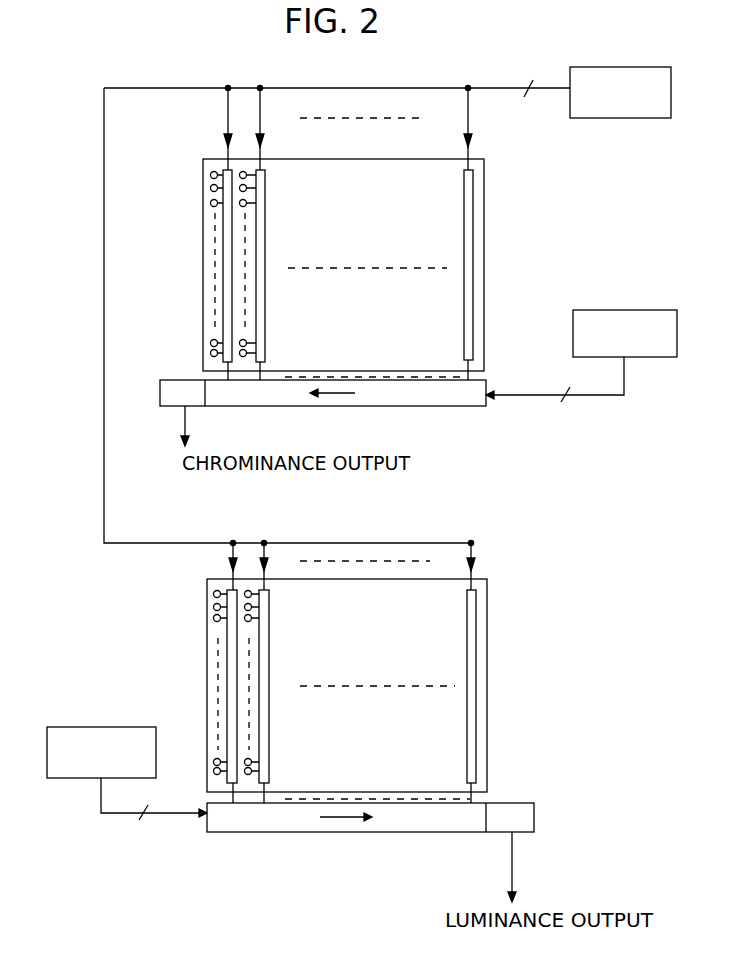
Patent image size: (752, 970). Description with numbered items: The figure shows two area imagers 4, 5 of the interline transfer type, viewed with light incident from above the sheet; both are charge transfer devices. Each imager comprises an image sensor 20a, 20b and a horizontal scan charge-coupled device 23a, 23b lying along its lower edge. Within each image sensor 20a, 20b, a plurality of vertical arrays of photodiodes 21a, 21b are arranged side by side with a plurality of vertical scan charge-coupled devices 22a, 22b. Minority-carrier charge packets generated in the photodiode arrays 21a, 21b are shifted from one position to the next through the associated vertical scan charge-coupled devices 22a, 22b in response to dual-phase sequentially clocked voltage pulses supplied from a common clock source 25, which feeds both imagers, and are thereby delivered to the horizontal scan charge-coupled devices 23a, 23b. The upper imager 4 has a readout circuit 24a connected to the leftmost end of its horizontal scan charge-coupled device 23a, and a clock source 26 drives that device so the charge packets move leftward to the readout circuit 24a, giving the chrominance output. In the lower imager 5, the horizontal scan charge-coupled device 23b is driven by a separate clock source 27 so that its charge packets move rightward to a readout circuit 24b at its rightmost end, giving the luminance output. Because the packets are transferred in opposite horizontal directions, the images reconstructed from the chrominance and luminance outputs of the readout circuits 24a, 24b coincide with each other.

The area imager 4 is at (535, 258).
The area imager 5 is at (532, 704).
The image sensor 20a is at (487, 160).
The image sensor 20b is at (487, 596).
The photodiodes 21a is at (210, 188).
The photodiodes 21b is at (213, 618).
The vertical scan charge-coupled devices 22a is at (262, 171).
The vertical scan charge-coupled devices 22b is at (265, 590).
The horizontal scan charge-coupled device 23a is at (450, 407).
The horizontal scan charge-coupled device 23b is at (424, 832).
The readout circuit 24a is at (163, 407).
The readout circuit 24b is at (517, 803).
The common clock source 25 is at (613, 67).
The clock source 26 is at (600, 310).
The clock source 27 is at (103, 727).